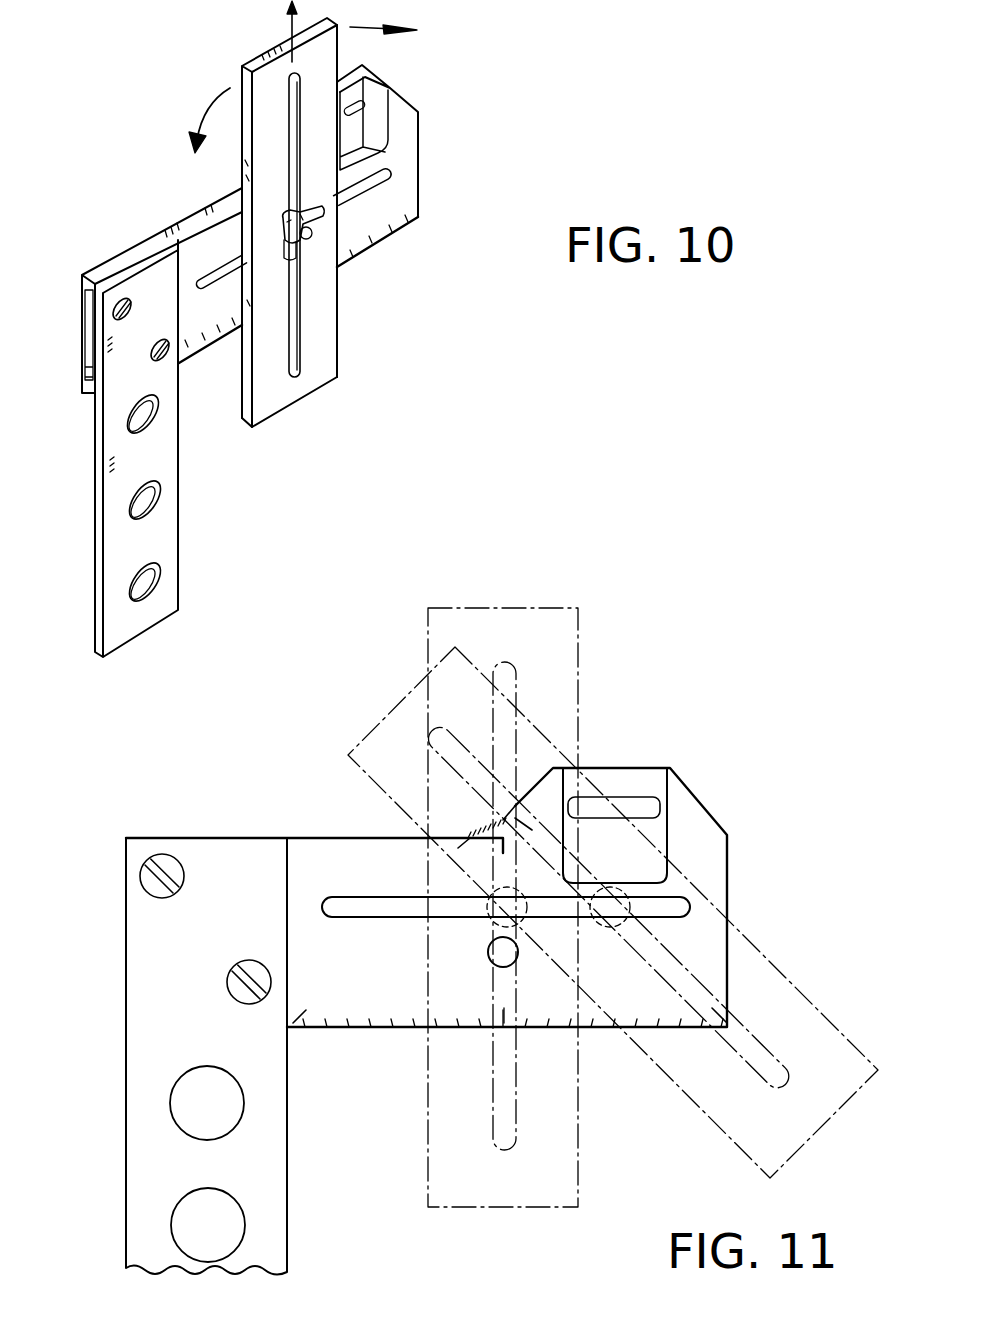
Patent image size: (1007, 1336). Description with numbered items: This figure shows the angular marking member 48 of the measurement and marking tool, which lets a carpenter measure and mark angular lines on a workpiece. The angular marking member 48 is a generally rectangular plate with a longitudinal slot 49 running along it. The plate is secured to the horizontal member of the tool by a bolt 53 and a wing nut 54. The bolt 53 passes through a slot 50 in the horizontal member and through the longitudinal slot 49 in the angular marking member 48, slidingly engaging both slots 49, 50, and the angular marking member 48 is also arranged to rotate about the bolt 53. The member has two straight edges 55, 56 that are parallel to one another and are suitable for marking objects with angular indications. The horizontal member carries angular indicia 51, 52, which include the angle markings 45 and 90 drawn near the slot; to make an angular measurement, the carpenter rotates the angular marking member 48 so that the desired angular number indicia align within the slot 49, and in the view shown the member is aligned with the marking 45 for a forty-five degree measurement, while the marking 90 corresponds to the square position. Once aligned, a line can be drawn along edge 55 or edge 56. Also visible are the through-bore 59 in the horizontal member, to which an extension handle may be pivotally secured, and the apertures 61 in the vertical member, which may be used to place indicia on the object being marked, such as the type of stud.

In FIG. 11, the 45 degree indicia 45 is at (510, 920).
In FIG. 10, the angular marking member 48 is at (322, 355).
In FIG. 10, the longitudinal slot 49 is at (298, 308).
In FIG. 10, the slot 50 is at (392, 174).
In FIG. 11, the angular indicia 51 is at (515, 808).
In FIG. 11, the angular indicia 52 is at (720, 1058).
In FIG. 10, the bolt 53 is at (313, 237).
In FIG. 10, the wing nut 54 is at (289, 222).
In FIG. 10, the straight edge 55 is at (247, 400).
In FIG. 10, the straight edge 56 is at (337, 330).
In FIG. 11, the through-bore 59 is at (490, 952).
In FIG. 10, the apertures 61 is at (135, 495).
In FIG. 11, the 90 degree indicia 90 is at (558, 938).